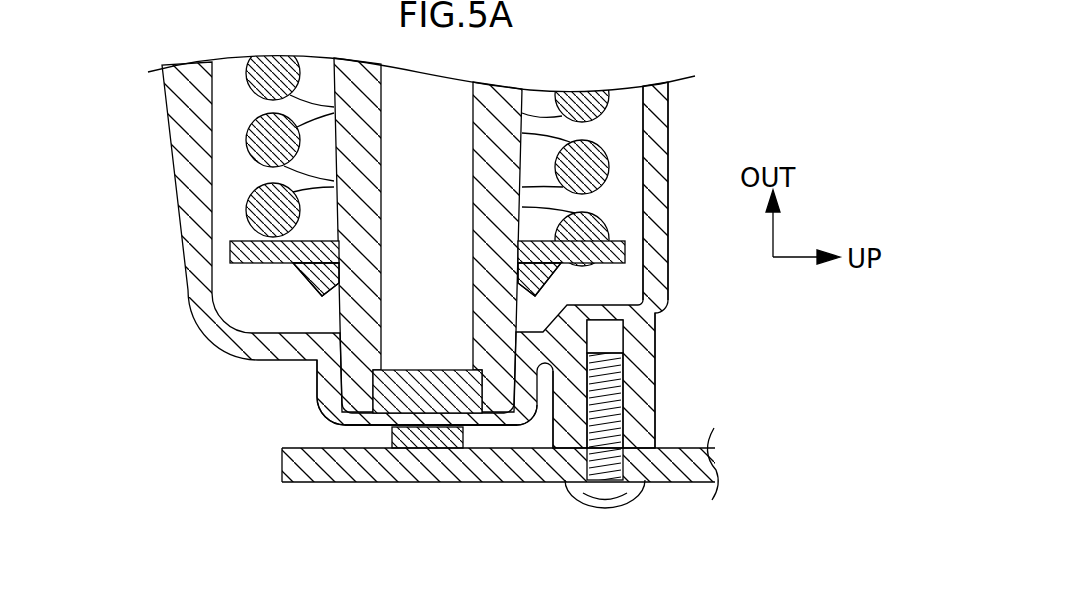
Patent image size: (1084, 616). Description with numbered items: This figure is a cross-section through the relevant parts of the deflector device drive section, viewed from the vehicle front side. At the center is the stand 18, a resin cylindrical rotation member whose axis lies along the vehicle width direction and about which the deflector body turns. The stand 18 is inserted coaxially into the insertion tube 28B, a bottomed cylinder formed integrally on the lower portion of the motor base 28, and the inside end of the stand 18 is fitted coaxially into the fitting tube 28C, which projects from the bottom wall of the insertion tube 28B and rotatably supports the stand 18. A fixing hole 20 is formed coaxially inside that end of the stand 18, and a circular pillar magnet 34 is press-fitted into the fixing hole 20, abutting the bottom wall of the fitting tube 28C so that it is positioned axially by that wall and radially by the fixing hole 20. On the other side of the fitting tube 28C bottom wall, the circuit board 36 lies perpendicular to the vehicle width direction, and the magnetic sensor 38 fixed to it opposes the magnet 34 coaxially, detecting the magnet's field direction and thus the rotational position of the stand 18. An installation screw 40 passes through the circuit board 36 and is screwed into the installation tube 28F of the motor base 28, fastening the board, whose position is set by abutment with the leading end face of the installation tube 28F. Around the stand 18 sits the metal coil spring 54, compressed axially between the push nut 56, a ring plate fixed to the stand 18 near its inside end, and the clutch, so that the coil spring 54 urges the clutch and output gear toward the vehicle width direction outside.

The stand 18 is at (337, 308).
The fixing hole 20 is at (383, 418).
The motor base 28 is at (172, 143).
The insertion tube 28B is at (668, 137).
The fitting tube 28C is at (502, 427).
The installation tube 28F is at (657, 393).
The magnet 34 is at (428, 368).
The circuit board 36 is at (302, 482).
The magnetic sensor 38 is at (463, 428).
The installation screw 40 is at (632, 503).
The coil spring 54 is at (609, 177).
The push nut 56 is at (668, 260).